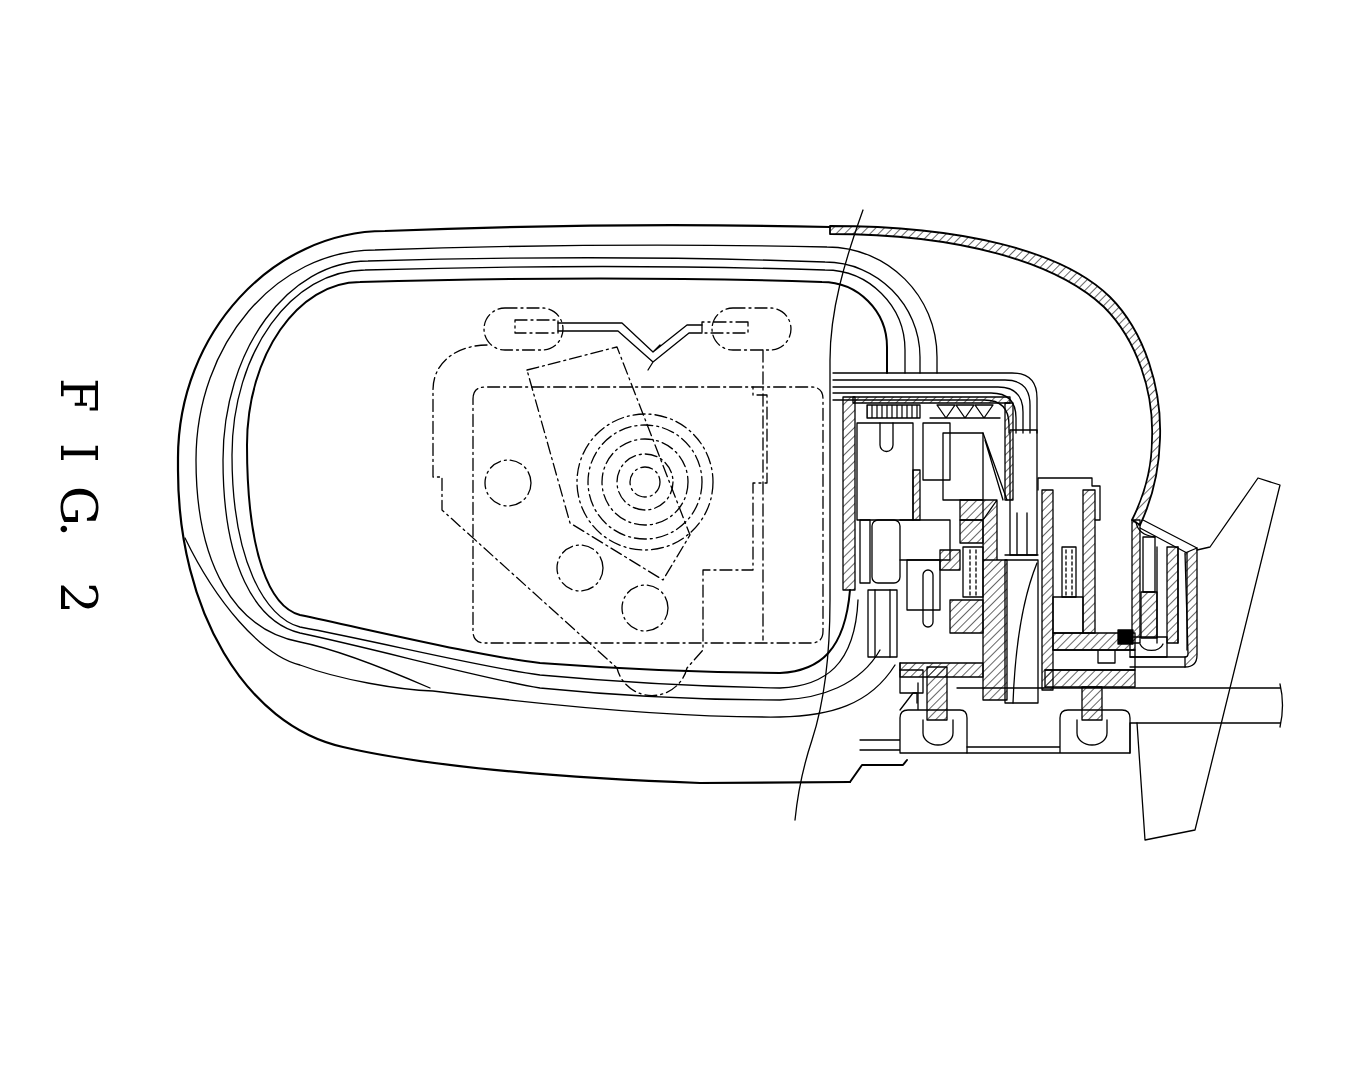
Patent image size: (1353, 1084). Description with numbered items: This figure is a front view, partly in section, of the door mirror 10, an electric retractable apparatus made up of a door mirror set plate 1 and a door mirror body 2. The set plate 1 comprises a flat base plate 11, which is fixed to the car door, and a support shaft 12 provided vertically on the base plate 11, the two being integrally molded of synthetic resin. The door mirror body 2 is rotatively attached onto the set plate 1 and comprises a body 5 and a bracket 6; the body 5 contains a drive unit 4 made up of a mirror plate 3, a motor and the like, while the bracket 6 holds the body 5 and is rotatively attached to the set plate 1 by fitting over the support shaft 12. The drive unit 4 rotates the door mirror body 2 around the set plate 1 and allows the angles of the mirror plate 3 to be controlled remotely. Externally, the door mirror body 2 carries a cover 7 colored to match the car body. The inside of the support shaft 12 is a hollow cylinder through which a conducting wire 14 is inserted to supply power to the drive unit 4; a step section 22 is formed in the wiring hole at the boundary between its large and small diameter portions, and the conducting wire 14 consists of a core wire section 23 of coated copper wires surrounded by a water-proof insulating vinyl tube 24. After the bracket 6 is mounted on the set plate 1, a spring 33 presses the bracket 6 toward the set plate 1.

The door mirror set plate 1 is at (1087, 728).
The door mirror body 2 is at (612, 758).
The mirror plate 3 is at (377, 597).
The drive unit 4 is at (683, 403).
The body 5 is at (818, 362).
The bracket 6 is at (893, 663).
The cover 7 is at (1067, 264).
The door mirror 10 is at (375, 220).
The base plate 11 is at (1120, 688).
The support shaft 12 is at (1157, 633).
The conducting wire 14 is at (1253, 732).
The step section 22 is at (1037, 713).
The core wire section 23 is at (1043, 457).
The vinyl tube 24 is at (1027, 713).
The spring 33 is at (1150, 530).